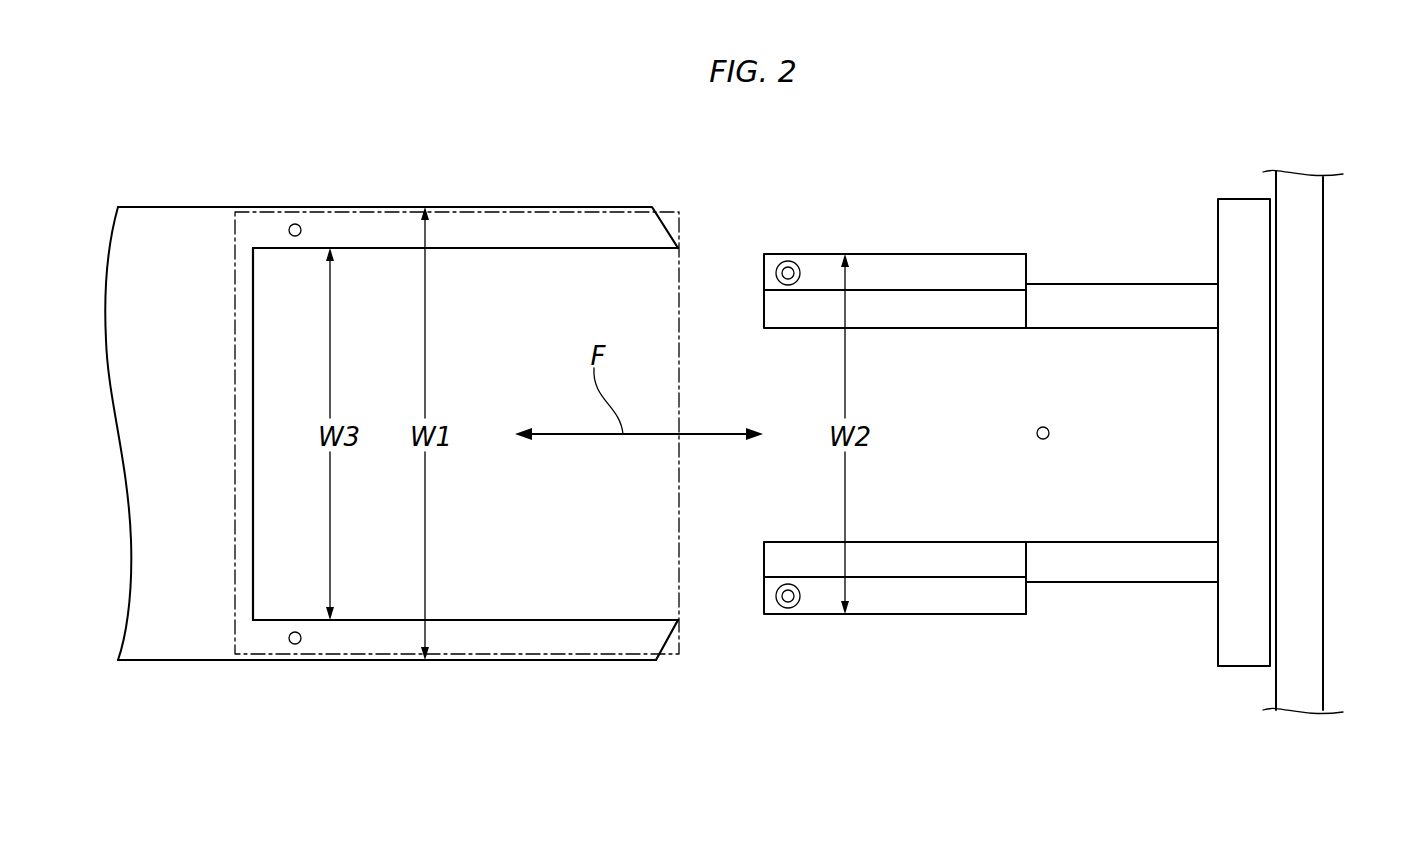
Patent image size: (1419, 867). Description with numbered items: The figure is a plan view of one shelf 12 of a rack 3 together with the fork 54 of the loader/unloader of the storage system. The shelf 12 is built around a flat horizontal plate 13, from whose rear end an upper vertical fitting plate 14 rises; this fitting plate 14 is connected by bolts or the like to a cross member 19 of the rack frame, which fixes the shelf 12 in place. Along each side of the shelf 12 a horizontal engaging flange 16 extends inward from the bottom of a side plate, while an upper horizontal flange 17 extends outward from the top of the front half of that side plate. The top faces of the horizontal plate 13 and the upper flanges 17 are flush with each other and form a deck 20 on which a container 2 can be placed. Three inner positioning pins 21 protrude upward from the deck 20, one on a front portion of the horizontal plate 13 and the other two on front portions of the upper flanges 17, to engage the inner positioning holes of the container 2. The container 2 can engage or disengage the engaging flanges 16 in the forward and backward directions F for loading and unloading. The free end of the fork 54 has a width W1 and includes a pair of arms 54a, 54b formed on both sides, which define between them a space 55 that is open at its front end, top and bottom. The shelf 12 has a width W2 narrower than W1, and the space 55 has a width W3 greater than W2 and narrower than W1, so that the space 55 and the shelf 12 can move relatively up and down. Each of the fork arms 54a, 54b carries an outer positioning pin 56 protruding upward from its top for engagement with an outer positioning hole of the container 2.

The container 2 is at (680, 508).
The rack 3 is at (1252, 192).
The shelf 12 is at (933, 246).
The flat horizontal plate 13 is at (1143, 502).
The upper vertical fitting plate 14 is at (1270, 630).
The horizontal engaging flange 16 is at (937, 310).
The upper horizontal flange 17 is at (873, 272).
The cross member 19 is at (1308, 215).
The deck 20 is at (1012, 272).
The inner positioning pin 21 is at (788, 262).
The fork 54 is at (224, 204).
The fork arm 54a is at (516, 636).
The fork arm 54b is at (540, 228).
The space 55 is at (488, 553).
The outer positioning pin 56 is at (295, 224).